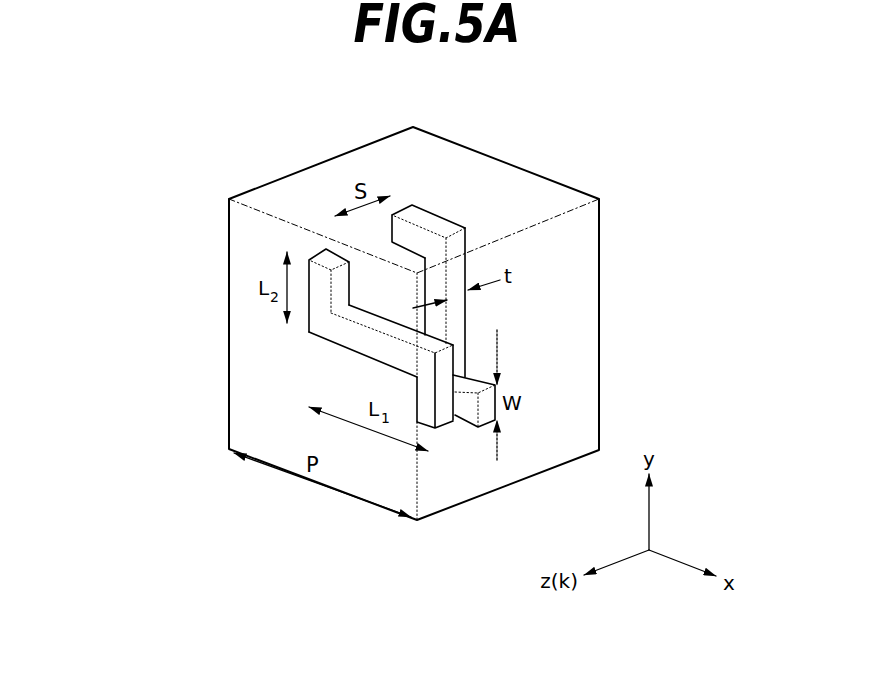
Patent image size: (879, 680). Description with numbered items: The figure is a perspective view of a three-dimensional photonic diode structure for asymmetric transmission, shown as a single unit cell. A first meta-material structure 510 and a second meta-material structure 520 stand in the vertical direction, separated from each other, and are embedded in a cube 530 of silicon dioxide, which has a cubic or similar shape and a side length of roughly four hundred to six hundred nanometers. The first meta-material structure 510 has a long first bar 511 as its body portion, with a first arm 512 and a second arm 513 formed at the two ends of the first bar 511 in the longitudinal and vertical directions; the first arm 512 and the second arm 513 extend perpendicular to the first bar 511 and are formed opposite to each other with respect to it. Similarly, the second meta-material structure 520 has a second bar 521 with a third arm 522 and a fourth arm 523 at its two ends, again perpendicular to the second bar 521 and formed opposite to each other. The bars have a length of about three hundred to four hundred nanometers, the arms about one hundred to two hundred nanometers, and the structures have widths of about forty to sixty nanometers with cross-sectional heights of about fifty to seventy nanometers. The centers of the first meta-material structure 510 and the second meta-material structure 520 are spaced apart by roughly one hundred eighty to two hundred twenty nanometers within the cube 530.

The cube of SiO2 530 is at (225, 225).
The first meta-material structure 510 is at (319, 414).
The first bar 511 is at (373, 342).
The first arm 512 is at (447, 420).
The second arm 513 is at (316, 291).
The second meta-material structure 520 is at (531, 337).
The second bar 521 is at (458, 330).
The third arm 522 is at (487, 407).
The fourth arm 523 is at (438, 222).